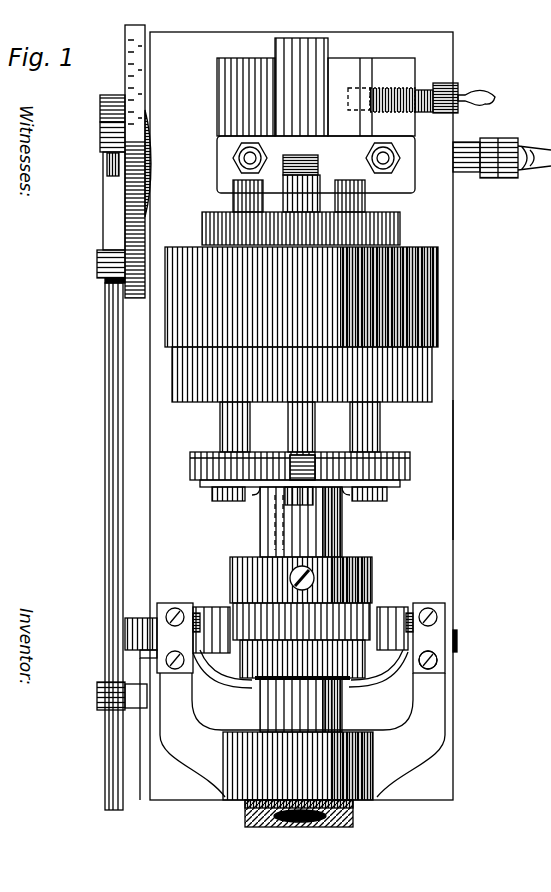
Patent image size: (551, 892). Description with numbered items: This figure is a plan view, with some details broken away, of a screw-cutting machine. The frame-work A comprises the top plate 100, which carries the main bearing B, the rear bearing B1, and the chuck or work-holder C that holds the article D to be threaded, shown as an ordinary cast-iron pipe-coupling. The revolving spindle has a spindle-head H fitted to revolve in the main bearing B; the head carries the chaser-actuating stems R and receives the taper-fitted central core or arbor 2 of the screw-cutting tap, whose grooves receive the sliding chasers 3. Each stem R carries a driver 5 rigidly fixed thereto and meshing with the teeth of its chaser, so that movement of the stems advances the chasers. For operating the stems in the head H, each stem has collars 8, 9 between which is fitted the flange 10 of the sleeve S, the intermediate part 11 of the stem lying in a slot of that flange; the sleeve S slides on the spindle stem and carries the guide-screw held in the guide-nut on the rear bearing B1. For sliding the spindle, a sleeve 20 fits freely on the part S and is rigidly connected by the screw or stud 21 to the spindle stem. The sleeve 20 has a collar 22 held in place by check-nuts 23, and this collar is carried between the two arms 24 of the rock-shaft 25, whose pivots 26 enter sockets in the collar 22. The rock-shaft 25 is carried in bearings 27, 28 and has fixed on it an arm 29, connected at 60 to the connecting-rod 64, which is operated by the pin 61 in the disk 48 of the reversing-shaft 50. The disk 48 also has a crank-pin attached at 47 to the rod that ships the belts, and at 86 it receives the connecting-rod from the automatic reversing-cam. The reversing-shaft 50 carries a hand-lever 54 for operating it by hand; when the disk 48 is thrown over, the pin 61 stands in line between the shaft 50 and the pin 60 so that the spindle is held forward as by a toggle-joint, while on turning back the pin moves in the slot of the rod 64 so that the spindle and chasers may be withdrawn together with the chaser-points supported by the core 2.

The frame-work A is at (441, 542).
The top plate 100 is at (433, 467).
The disk 48 is at (140, 55).
The attachment point of connecting-rod 86 is at (100, 108).
The attachment point of connecting-rod to crank-pin 47 is at (100, 143).
The pin 61 is at (98, 266).
The connecting-rod 64 is at (115, 512).
The connection point 60 is at (98, 700).
The arm 29 is at (132, 665).
The article to be threaded D is at (330, 47).
The chuck C is at (217, 88).
The sliding chasers 3 is at (283, 165).
The central core or arbor 2 is at (320, 180).
The driver 5 is at (299, 196).
The spindle-head H is at (398, 223).
The main bearing B is at (435, 296).
The chaser-actuating stems R is at (372, 422).
The flange 10 is at (192, 462).
The collar 8 is at (352, 453).
The collar 9 is at (392, 486).
The sleeve S is at (335, 716).
The intermediate part of the stem 11 is at (340, 494).
The sleeve 20 is at (370, 578).
The screw or stud 21 is at (310, 578).
The collar 22 is at (252, 623).
The check-nuts 23 is at (262, 655).
The arms 24 is at (393, 610).
The bearing 27 is at (184, 650).
The rock-shaft 25 is at (376, 655).
The pivots 26 is at (407, 622).
The bearing 28 is at (440, 658).
The rear bearing B1 is at (346, 796).
The reversing-shaft 50 is at (470, 174).
The hand-lever 54 is at (487, 140).